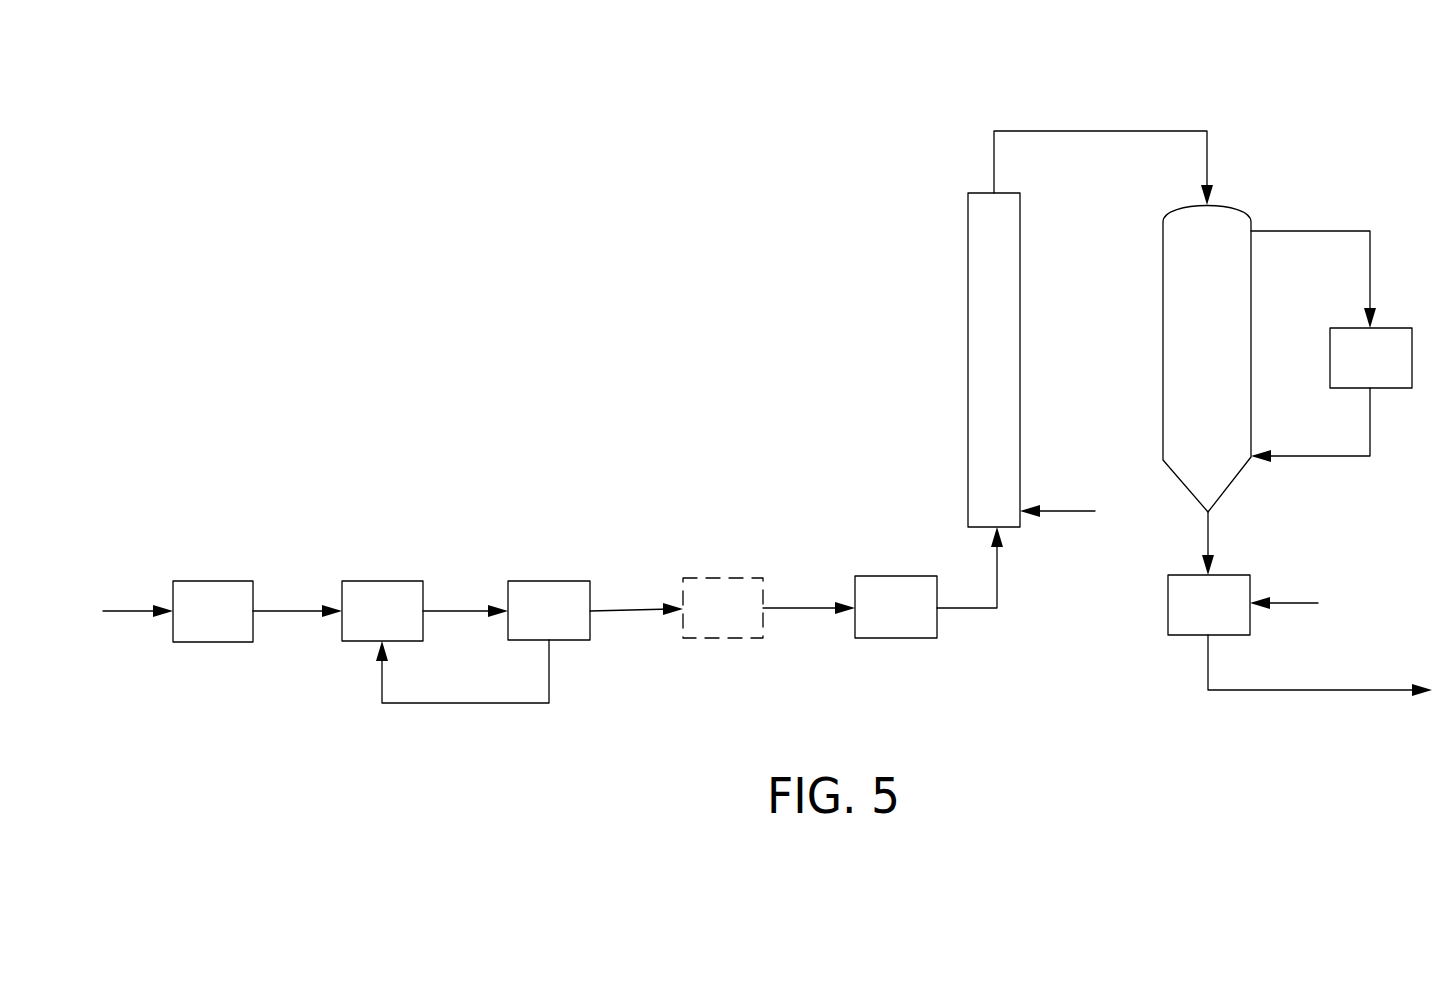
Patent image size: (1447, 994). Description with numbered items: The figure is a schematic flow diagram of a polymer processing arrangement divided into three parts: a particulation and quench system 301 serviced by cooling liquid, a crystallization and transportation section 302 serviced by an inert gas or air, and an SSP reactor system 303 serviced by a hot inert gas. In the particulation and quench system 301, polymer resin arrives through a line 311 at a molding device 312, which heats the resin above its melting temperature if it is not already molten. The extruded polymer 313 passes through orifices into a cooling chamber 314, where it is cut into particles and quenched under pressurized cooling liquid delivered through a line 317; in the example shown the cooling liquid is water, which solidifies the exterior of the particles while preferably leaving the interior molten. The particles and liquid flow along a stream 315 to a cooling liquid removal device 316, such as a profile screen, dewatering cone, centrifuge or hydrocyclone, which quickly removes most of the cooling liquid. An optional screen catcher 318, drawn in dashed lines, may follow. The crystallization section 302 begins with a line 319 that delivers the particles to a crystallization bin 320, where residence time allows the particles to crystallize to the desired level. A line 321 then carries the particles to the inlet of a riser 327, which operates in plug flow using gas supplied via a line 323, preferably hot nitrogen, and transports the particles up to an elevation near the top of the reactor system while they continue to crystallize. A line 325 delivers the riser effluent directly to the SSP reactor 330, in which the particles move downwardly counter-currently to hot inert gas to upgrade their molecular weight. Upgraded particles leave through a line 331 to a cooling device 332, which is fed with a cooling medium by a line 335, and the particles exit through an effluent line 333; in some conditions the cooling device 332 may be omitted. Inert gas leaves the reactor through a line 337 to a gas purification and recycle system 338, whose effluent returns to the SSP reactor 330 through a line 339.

The particulation and quench system 301 is at (380, 462).
The crystallization and transportation section 302 is at (871, 271).
The SSP reactor system 303 is at (1310, 120).
The line 311 is at (139, 608).
The molding device 312 is at (213, 580).
The extruded polymer 313 is at (297, 608).
The cooling chamber 314 is at (381, 580).
The intermediate stream 315 is at (466, 608).
The cooling liquid removal device 316 is at (549, 580).
The line 317 is at (467, 705).
The screen catcher 318 is at (722, 578).
The line 319 is at (636, 608).
The crystallization bin 320 is at (895, 576).
The line 321 is at (998, 567).
The line 323 is at (1074, 510).
The line 325 is at (1099, 130).
The riser 327 is at (968, 352).
The SSP reactor 330 is at (1180, 207).
The line 331 is at (1207, 548).
The cooling device 332 is at (1168, 604).
The effluent line 333 is at (1384, 688).
The line 335 is at (1297, 603).
The line 337 is at (1310, 230).
The gas purification and recycle system 338 is at (1343, 327).
The line 339 is at (1355, 458).